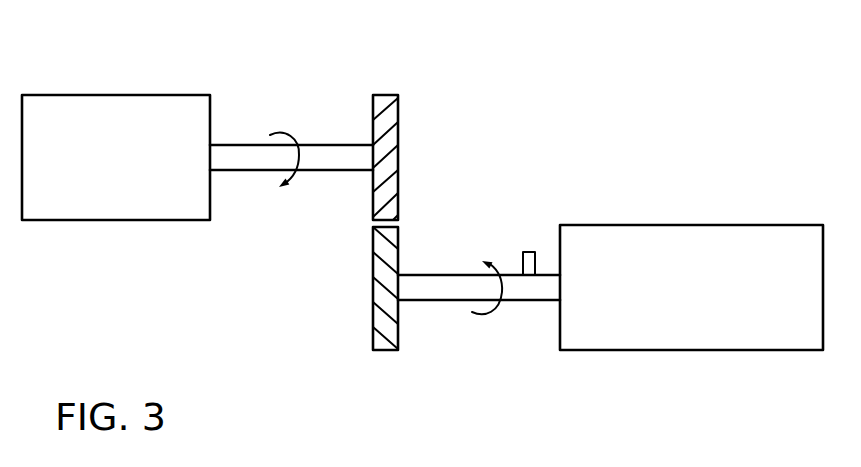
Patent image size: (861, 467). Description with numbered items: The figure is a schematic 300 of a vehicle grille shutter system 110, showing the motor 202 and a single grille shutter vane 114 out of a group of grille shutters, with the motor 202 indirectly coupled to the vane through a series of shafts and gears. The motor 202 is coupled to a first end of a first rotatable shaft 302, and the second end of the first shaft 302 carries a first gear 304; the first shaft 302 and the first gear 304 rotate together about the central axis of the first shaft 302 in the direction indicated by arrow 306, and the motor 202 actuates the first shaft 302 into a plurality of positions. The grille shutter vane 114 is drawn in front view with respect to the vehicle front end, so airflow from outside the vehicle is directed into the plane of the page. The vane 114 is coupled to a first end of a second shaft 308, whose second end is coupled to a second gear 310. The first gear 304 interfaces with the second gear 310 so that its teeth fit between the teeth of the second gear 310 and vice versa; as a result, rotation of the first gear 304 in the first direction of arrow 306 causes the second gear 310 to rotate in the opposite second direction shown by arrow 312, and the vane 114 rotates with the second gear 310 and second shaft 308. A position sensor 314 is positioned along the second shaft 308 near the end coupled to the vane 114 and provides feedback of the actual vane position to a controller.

The schematic 300 is at (717, 54).
The grille shutter system 110 is at (489, 79).
The motor 202 is at (98, 168).
The arrow 306 is at (327, 171).
The first rotatable shaft 302 is at (294, 133).
The first gear 304 is at (399, 108).
The second gear 310 is at (399, 331).
The second shaft 308 is at (410, 274).
The arrow 312 is at (491, 317).
The position sensor 314 is at (529, 251).
The grille shutter vane 114 is at (672, 298).